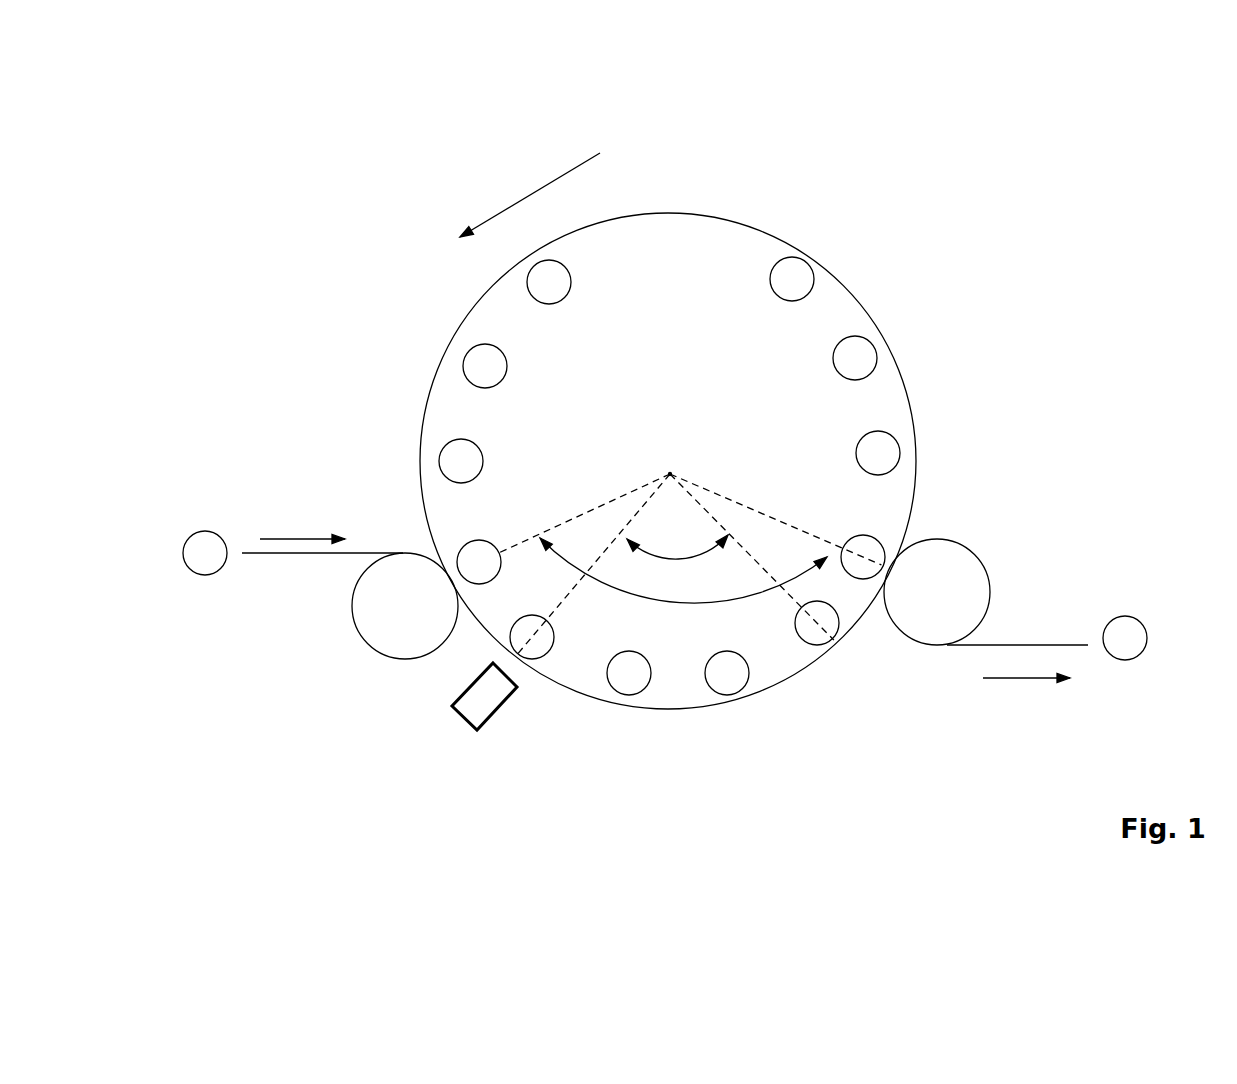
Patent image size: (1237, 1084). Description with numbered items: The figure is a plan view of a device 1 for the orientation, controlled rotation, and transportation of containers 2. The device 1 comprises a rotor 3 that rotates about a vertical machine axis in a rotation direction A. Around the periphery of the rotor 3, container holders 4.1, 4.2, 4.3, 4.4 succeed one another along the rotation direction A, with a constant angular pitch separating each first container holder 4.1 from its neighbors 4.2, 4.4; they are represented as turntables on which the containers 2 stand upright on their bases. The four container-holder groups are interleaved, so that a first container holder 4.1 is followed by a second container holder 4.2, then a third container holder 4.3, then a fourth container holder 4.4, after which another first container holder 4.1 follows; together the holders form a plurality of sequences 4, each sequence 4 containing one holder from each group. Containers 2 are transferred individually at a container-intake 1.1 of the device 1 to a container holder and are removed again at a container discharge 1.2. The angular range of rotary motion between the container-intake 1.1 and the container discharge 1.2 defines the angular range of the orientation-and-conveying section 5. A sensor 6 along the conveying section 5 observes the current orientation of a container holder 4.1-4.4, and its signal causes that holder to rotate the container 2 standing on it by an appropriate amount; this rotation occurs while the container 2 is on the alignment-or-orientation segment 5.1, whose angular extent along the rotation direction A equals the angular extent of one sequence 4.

The device 1 is at (942, 277).
The container-intake 1.1 is at (403, 598).
The container discharge 1.2 is at (957, 570).
The container 2 is at (203, 577).
The rotor 3 is at (677, 278).
The sequence of container holders 4 is at (698, 740).
The first container holder 4.1 is at (488, 542).
The second container holder 4.2 is at (457, 458).
The third container holder 4.3 is at (629, 675).
The fourth container holder 4.4 is at (862, 548).
The orientation-and-conveying section 5 is at (690, 565).
The alignment-or-orientation segment 5.1 is at (677, 542).
The sensor 6 is at (478, 708).
The rotation direction A is at (530, 195).